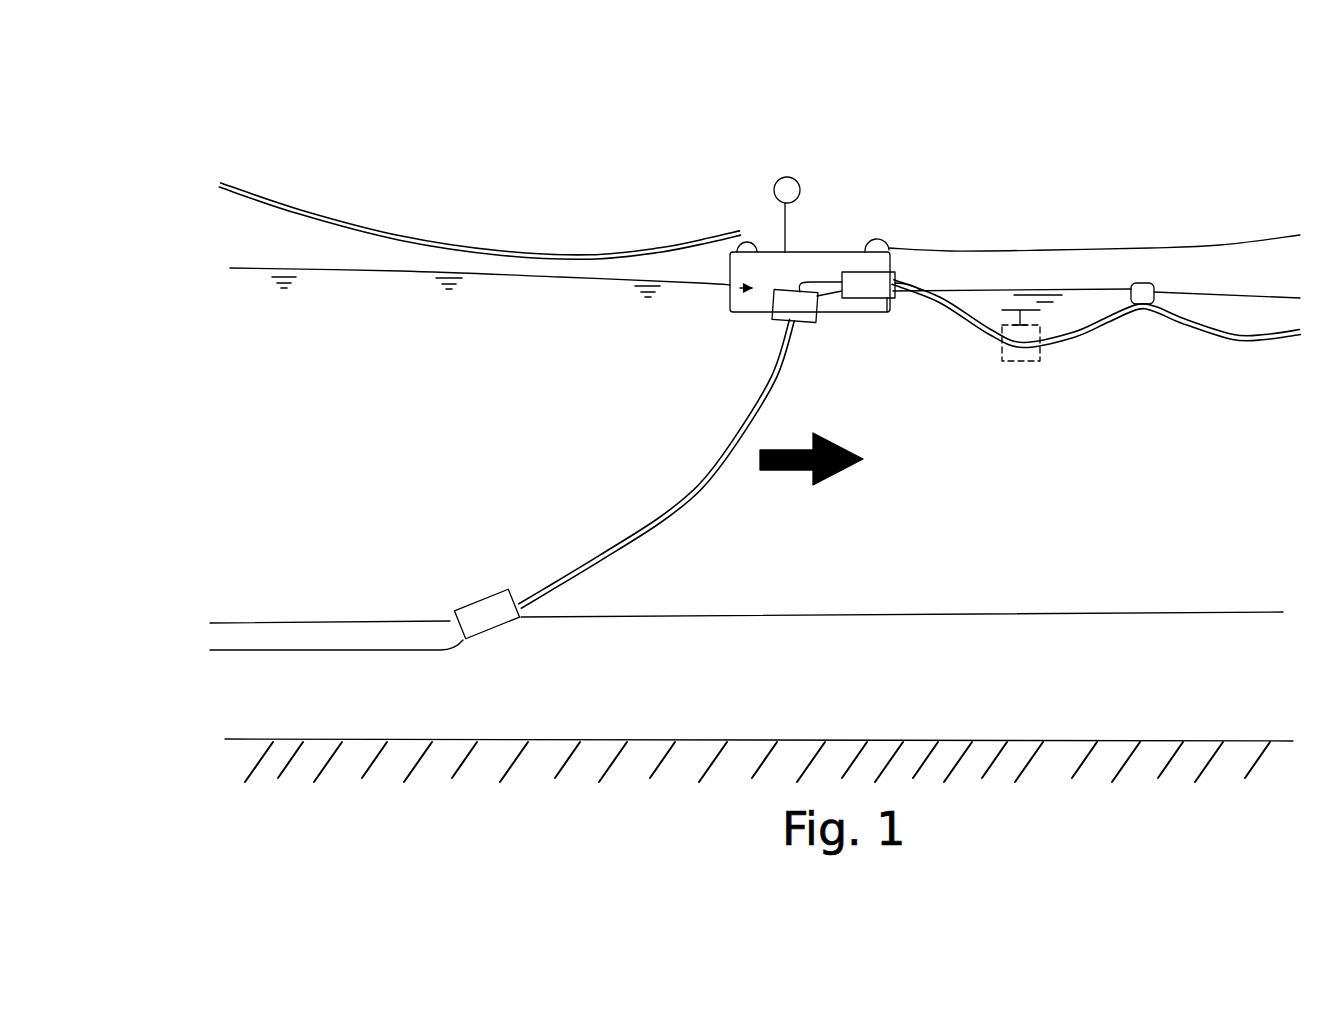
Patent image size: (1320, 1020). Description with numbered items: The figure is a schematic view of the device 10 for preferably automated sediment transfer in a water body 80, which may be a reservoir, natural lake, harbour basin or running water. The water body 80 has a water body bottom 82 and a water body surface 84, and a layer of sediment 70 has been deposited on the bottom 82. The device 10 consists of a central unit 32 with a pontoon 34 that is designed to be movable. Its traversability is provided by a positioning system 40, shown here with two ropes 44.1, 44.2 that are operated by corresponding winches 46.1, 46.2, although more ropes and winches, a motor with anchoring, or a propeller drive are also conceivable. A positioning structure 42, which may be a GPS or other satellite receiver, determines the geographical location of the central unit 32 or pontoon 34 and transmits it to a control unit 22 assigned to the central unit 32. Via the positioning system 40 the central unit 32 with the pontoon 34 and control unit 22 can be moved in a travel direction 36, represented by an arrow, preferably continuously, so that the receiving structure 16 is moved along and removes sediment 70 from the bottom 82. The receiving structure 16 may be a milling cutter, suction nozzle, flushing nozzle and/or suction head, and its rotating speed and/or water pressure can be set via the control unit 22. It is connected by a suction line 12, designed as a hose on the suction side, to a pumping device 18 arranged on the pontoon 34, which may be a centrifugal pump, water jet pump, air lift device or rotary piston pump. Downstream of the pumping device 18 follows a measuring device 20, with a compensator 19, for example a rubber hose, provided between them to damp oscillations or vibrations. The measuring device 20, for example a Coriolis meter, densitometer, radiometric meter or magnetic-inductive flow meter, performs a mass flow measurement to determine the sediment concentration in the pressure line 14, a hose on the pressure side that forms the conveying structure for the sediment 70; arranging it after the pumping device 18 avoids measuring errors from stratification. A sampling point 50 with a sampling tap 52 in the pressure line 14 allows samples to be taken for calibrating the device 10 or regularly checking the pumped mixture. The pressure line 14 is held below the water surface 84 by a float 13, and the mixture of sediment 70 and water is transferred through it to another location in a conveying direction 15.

The device 10 is at (1062, 170).
The suction line 12 is at (674, 506).
The float 13 is at (1138, 284).
The pressure line 14 is at (1106, 338).
The conveying direction 15 is at (1264, 350).
The receiving structure 16 is at (480, 610).
The pumping device 18 is at (790, 318).
The compensator 19 is at (860, 300).
The measuring device 20 is at (902, 300).
The control unit 22 is at (735, 288).
The central unit 32 is at (840, 197).
The pontoon 34 is at (832, 257).
The travel direction 36 is at (787, 470).
The positioning system 40 is at (718, 202).
The positioning structure 42 is at (795, 178).
The rope 44.1 is at (452, 234).
The rope 44.2 is at (1152, 247).
The winch 46.1 is at (750, 232).
The winch 46.2 is at (888, 248).
The sampling point 50 is at (1005, 360).
The sampling tap 52 is at (1003, 308).
The sediment 70 is at (529, 704).
The water body 80 is at (343, 412).
The water body bottom 82 is at (245, 742).
The water body surface 84 is at (268, 268).